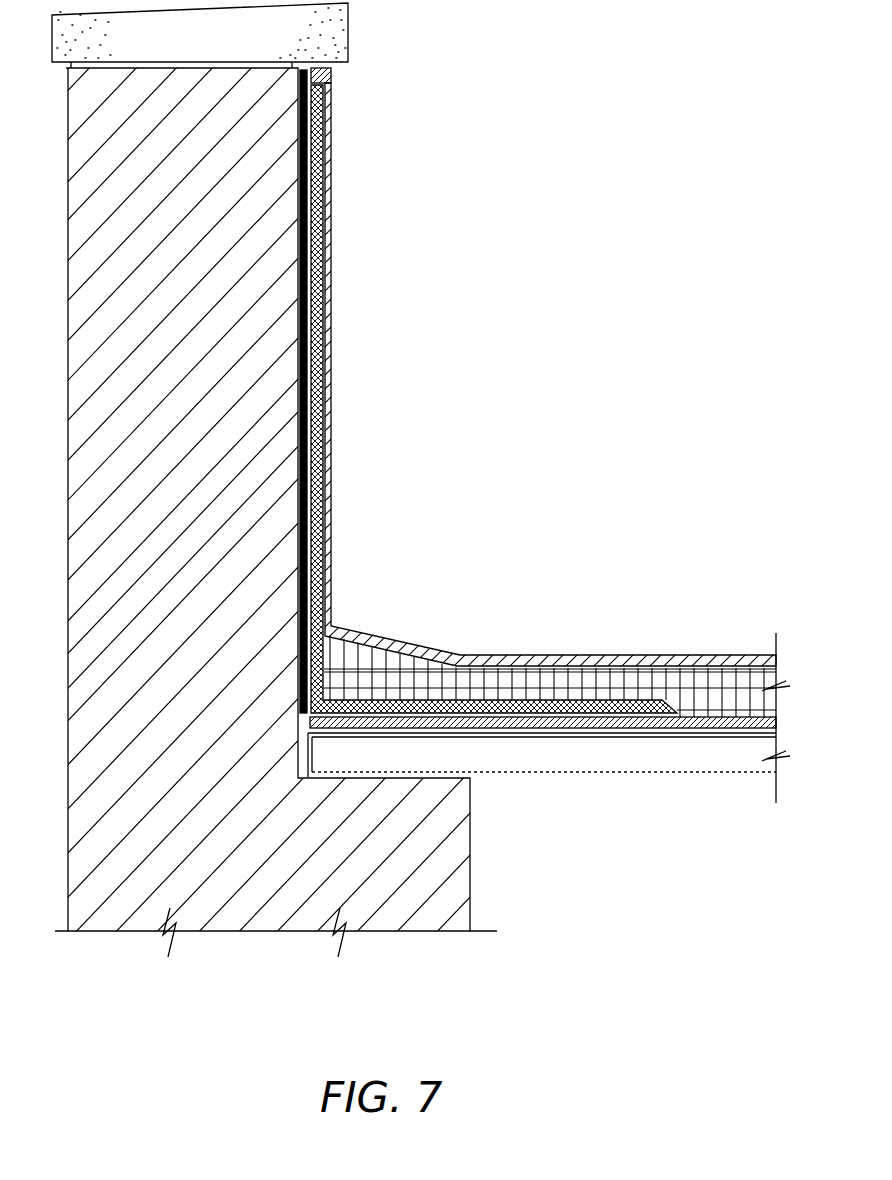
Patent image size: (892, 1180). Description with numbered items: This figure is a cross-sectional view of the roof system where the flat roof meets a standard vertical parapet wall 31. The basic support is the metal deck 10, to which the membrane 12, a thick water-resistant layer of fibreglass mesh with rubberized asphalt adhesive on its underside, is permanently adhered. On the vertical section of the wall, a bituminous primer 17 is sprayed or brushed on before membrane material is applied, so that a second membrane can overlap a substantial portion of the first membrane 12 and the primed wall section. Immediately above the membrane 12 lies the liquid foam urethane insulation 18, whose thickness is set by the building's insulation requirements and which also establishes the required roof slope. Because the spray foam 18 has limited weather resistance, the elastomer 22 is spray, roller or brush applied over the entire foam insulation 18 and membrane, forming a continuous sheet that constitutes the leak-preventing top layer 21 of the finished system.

The metal deck 10 is at (648, 775).
The membrane material 12 is at (323, 362).
The bituminous primer 17 is at (307, 303).
The liquid foam urethane insulation 18 is at (762, 707).
The top layer 21 is at (548, 655).
The elastomer 22 is at (776, 660).
The wall 31 is at (470, 862).